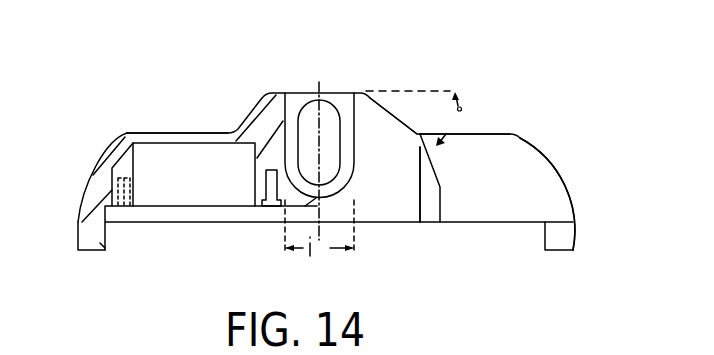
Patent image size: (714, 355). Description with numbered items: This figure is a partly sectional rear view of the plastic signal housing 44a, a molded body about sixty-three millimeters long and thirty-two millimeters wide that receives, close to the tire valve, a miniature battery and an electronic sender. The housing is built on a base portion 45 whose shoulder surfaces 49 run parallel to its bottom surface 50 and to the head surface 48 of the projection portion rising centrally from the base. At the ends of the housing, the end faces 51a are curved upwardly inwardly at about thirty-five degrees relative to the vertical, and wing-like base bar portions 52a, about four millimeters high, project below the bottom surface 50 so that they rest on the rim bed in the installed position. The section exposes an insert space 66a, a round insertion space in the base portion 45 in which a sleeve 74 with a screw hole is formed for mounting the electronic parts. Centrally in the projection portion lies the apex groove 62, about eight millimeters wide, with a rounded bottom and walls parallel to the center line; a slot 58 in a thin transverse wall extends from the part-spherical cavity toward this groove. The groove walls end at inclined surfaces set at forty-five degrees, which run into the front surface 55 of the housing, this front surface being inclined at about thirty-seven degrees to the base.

The signal housing 44a is at (137, 108).
The end face 51a is at (104, 152).
The shoulder surface 49 is at (177, 133).
The insert space 66a is at (187, 178).
The sleeve 74 is at (118, 186).
The slot 58 is at (306, 118).
The head surface 48 is at (322, 101).
The apex groove 62 is at (344, 106).
The base portion 45 is at (536, 159).
The front surface 55 is at (498, 190).
The bottom surface 50 is at (136, 223).
The base bar portion 52a is at (88, 251).